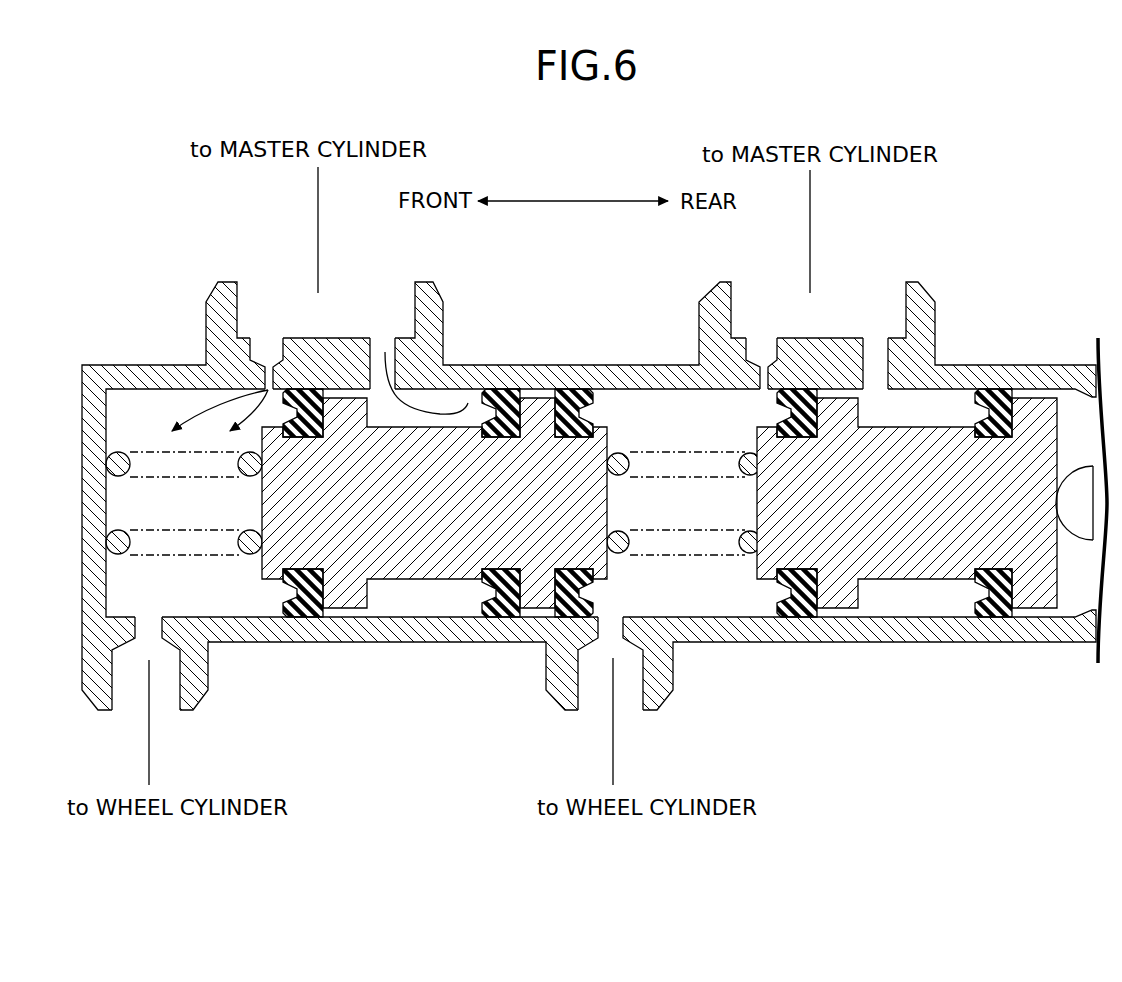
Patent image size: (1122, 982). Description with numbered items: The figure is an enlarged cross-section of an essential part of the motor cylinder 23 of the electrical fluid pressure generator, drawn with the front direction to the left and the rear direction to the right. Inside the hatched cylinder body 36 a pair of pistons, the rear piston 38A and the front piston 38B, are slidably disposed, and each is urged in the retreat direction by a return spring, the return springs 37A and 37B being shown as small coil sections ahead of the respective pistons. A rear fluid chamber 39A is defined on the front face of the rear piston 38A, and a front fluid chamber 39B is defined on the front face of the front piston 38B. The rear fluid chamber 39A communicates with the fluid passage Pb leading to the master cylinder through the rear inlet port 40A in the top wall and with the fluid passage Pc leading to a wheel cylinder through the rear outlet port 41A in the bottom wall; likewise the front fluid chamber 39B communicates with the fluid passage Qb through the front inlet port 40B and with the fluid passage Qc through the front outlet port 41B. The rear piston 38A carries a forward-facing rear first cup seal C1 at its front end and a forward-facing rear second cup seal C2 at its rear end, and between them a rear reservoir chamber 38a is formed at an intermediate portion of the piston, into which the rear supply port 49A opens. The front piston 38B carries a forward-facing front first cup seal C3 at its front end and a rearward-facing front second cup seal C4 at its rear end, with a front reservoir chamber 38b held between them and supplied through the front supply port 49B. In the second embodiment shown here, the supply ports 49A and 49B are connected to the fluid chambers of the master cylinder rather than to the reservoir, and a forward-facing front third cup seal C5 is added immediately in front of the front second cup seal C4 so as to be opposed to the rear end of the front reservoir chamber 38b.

The motor cylinder 23 is at (552, 310).
The cylinder body 36 is at (572, 365).
The return spring 37A is at (627, 455).
The return spring 37B is at (121, 454).
The rear piston 38A is at (891, 513).
The front piston 38B is at (415, 513).
The rear reservoir chamber 38a is at (901, 417).
The front reservoir chamber 38b is at (421, 417).
The rear fluid chamber 39A is at (666, 513).
The front fluid chamber 39B is at (166, 513).
The rear inlet port 40A is at (765, 337).
The front inlet port 40B is at (272, 337).
The rear outlet port 41A is at (610, 626).
The front outlet port 41B is at (151, 628).
The rear supply port 49A is at (878, 350).
The front supply port 49B is at (386, 350).
The rear first cup seal C1 is at (798, 621).
The rear second cup seal C2 is at (980, 619).
The front first cup seal C3 is at (306, 611).
The front second cup seal C4 is at (550, 609).
The front third cup seal C5 is at (492, 612).
The fluid passage Qb is at (318, 244).
The fluid passage Pb is at (810, 235).
The fluid passage Qc is at (149, 712).
The fluid passage Pc is at (613, 712).